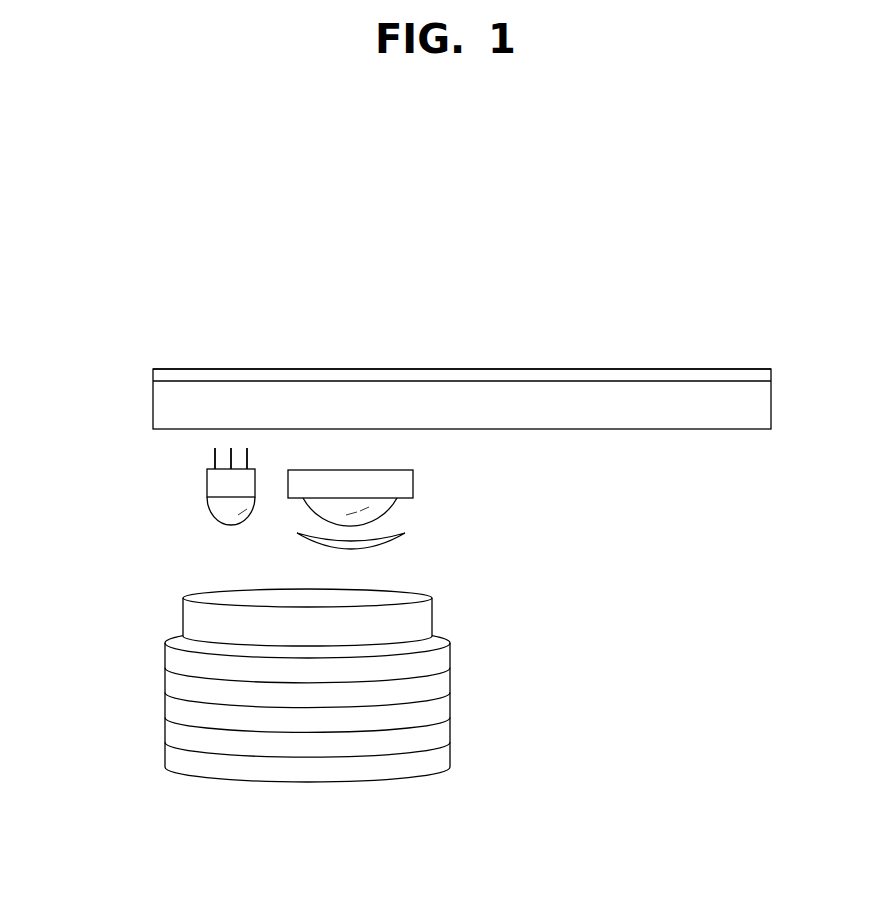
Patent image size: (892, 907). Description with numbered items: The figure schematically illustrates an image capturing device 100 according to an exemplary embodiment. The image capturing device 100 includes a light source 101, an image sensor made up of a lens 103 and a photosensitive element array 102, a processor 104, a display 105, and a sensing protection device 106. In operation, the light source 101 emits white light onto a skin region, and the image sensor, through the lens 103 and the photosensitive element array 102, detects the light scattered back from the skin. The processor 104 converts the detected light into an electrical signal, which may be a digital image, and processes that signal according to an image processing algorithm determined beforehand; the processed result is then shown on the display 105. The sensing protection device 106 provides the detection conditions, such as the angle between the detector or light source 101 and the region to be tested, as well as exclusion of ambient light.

The image capturing device 100 is at (714, 272).
The light source 101 is at (218, 482).
The photosensitive element array 102 is at (400, 482).
The lens 103 is at (377, 543).
The processor 104 is at (170, 402).
The display 105 is at (221, 375).
The sensing protection device 106 is at (411, 623).